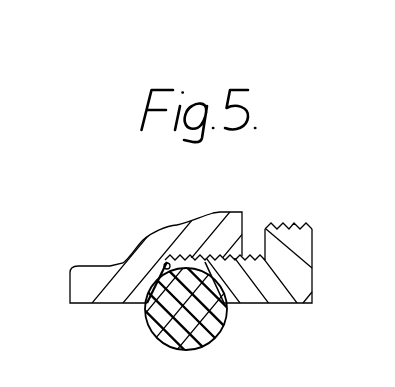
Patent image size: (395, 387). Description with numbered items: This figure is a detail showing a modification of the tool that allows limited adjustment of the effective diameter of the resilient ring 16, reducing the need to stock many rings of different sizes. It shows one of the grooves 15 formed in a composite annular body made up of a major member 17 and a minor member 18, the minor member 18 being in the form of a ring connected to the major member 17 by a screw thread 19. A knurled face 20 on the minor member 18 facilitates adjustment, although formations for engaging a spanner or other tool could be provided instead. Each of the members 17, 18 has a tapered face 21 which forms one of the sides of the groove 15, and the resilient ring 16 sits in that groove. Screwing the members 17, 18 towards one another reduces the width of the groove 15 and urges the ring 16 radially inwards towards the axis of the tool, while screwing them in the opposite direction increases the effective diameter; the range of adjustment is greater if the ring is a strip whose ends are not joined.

The groove 15 is at (236, 339).
The resilient ring 16 is at (163, 330).
The major member 17 is at (83, 283).
The minor member 18 is at (303, 283).
The screw thread 19 is at (214, 256).
The knurled face 20 is at (297, 223).
The tapered face 21 is at (167, 260).